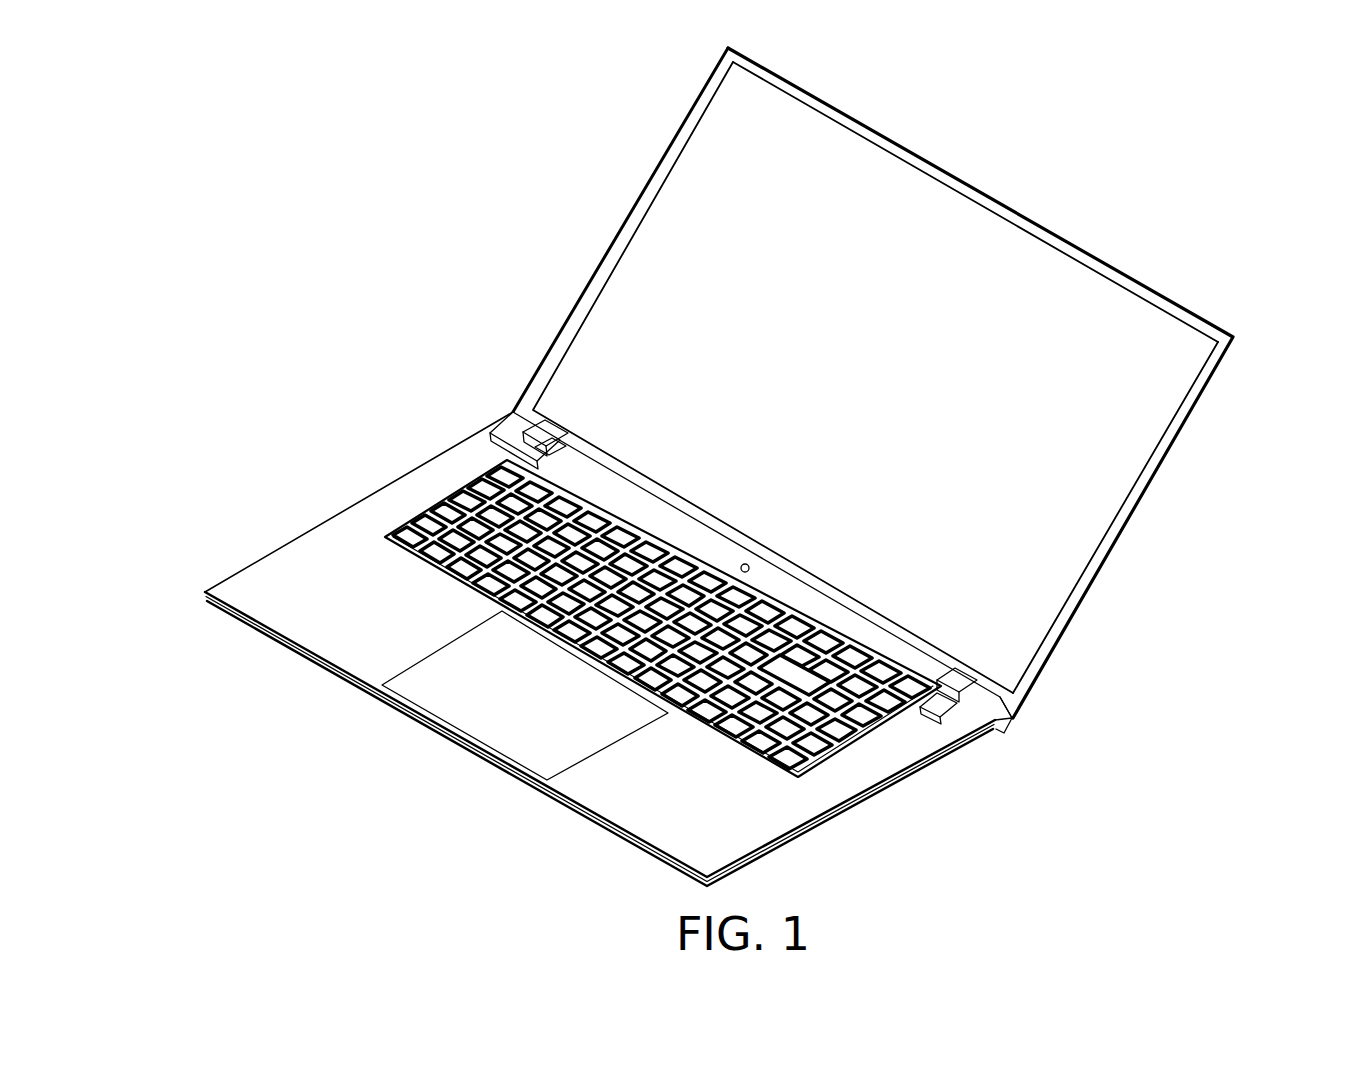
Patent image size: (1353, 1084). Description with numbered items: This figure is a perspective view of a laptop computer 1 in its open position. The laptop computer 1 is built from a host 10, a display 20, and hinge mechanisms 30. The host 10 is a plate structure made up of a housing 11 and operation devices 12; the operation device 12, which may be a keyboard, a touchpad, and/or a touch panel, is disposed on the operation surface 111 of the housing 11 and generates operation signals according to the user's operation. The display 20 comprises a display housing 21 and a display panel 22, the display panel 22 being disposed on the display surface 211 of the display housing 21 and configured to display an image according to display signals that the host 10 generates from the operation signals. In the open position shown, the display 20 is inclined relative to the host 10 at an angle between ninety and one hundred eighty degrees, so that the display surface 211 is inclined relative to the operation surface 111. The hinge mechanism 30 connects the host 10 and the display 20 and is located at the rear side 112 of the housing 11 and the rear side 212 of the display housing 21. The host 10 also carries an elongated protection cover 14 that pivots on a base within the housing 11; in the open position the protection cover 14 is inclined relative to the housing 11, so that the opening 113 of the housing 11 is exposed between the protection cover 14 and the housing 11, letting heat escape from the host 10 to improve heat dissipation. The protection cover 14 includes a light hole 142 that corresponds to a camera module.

The laptop computer 1 is at (152, 99).
The host 10 is at (361, 419).
The housing 11 is at (386, 483).
The operation surface 111 is at (315, 550).
The rear side 112 is at (1097, 752).
The opening 113 is at (1004, 731).
The operation device 12 is at (485, 597).
The protection cover 14 is at (512, 422).
The light hole 142 is at (745, 560).
The display 20 is at (1190, 246).
The display housing 21 is at (1082, 241).
The display surface 211 is at (668, 150).
The rear side 212 is at (1112, 718).
The display panel 22 is at (660, 228).
The hinge mechanism 30 is at (567, 423).